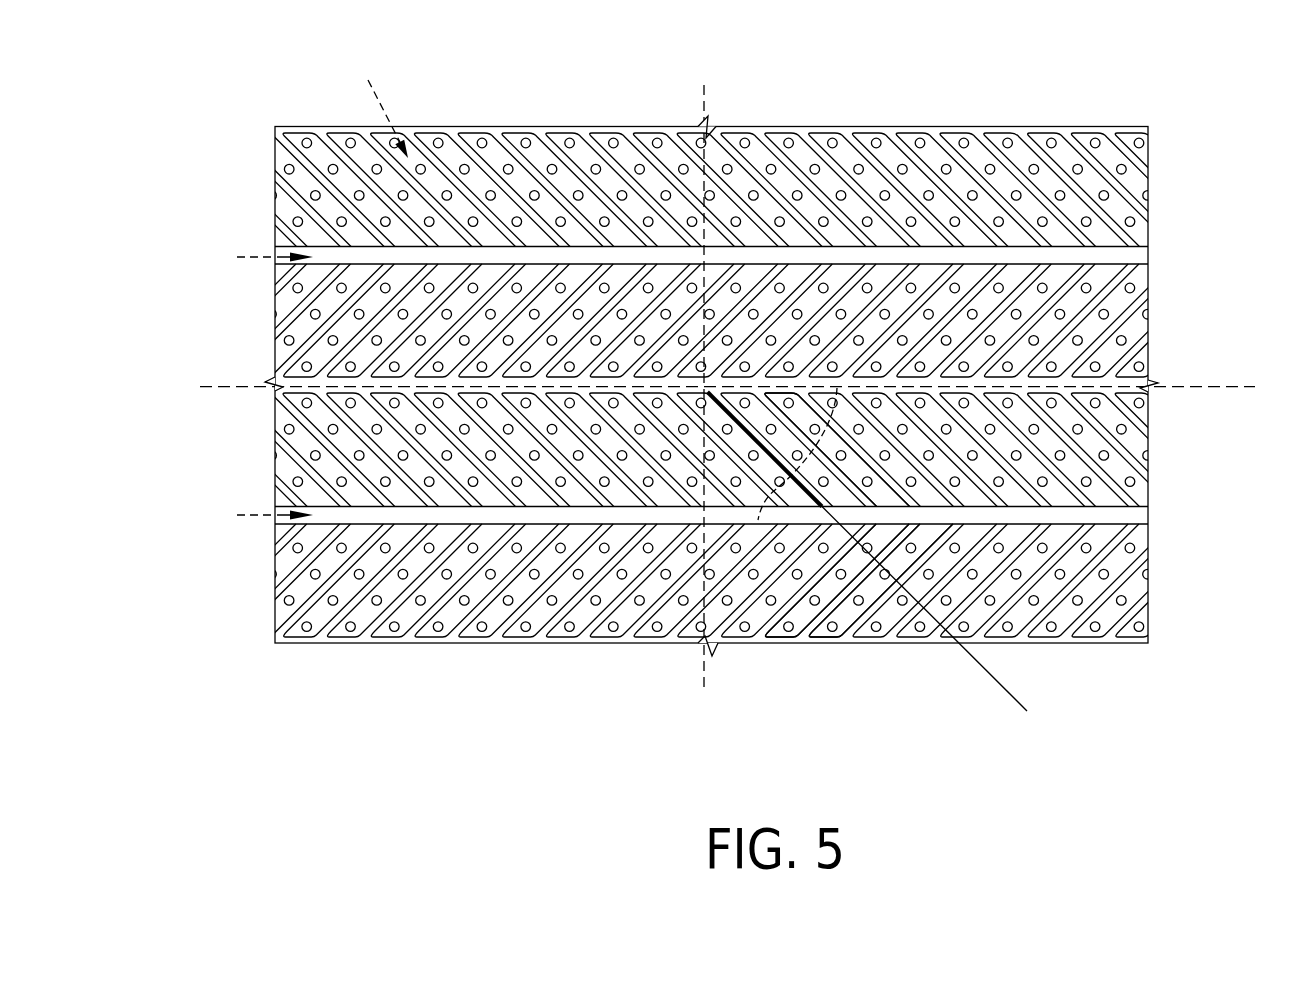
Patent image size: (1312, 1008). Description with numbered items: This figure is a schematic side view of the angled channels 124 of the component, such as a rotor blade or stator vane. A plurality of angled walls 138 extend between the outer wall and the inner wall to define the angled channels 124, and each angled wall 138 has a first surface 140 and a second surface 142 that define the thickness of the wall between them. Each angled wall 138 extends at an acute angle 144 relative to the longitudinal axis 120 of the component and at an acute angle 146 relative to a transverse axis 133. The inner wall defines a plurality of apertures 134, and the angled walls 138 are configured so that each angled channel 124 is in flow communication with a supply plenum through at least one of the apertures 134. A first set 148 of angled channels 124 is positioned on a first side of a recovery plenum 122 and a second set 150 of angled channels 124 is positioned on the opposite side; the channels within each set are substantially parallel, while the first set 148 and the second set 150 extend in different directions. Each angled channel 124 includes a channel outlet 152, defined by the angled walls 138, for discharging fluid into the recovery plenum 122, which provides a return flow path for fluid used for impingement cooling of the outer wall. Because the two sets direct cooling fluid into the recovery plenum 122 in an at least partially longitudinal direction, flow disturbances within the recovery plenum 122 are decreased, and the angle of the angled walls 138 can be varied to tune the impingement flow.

The longitudinal axis 120 is at (1203, 388).
The recovery plenum 122 is at (1090, 241).
The angled channel 124 is at (548, 170).
The transverse axis 133 is at (705, 667).
The apertures 134 is at (995, 221).
The angled walls 138 is at (417, 623).
The first surface 140 is at (808, 623).
The second surface 142 is at (808, 633).
The angle 144 is at (820, 443).
The angle 146 is at (760, 513).
The first set of angled channels 148 is at (250, 165).
The second set of angled channels 150 is at (253, 303).
The channel outlet 152 is at (782, 247).